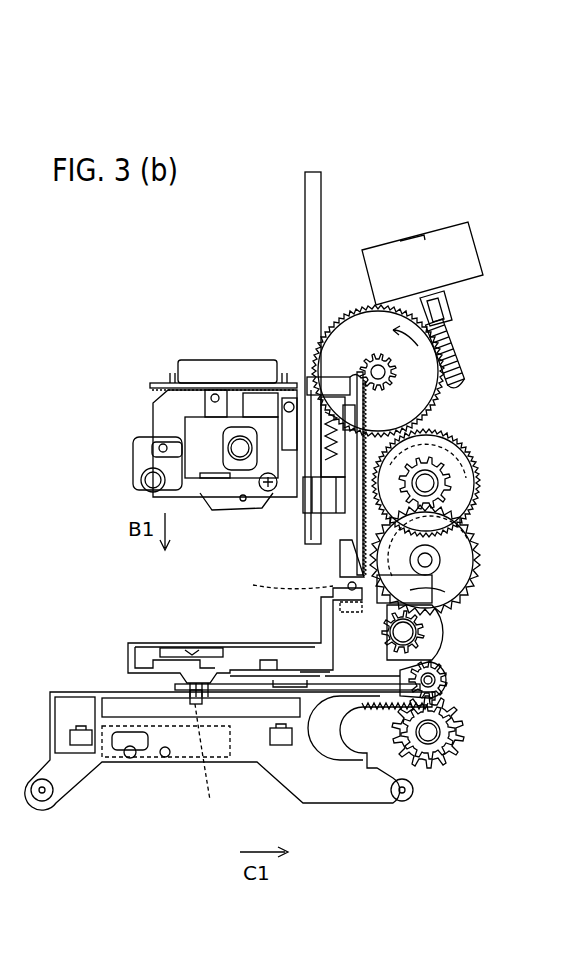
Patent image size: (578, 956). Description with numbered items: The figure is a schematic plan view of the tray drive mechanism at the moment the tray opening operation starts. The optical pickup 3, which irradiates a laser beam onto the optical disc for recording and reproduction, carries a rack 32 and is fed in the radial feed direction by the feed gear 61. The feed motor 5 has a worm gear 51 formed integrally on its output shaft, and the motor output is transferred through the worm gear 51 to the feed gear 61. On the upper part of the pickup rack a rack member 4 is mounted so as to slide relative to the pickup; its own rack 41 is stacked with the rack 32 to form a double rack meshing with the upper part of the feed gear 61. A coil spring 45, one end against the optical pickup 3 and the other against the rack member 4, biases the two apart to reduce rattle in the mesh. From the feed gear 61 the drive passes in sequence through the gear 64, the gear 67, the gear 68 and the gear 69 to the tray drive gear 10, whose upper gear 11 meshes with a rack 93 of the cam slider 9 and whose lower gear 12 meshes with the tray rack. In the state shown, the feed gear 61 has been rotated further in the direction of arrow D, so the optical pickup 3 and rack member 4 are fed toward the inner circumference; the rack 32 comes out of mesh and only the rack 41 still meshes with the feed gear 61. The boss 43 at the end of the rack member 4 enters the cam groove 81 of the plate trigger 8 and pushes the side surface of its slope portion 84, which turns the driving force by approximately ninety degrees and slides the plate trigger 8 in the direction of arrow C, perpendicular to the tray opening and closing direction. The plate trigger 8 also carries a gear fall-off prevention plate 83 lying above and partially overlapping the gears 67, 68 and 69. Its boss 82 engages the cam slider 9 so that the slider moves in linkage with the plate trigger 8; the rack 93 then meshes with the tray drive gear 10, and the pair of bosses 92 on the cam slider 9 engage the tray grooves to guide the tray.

The optical pickup 3 is at (240, 395).
The rack member 4 is at (330, 512).
The feed motor 5 is at (452, 238).
The plate trigger 8 is at (235, 657).
The cam slider 9 is at (180, 750).
The tray drive gear 10 is at (458, 777).
The upper gear 11 is at (420, 768).
The lower gear 12 is at (455, 745).
The rack 32 is at (476, 458).
The rack 41 is at (348, 345).
The boss 43 is at (340, 588).
The coil spring 45 is at (305, 360).
The worm gear 51 is at (452, 350).
The feed gear 61 is at (415, 395).
The gear 64 is at (455, 490).
The gear 67 is at (458, 563).
The gear 68 is at (437, 636).
The gear 69 is at (452, 692).
The cam groove 81 is at (295, 592).
The boss 82 is at (206, 762).
The gear fall-off prevention plate 83 is at (412, 590).
The slope portion 84 is at (468, 540).
The bosses 92 is at (42, 801).
The rack 93 is at (370, 708).